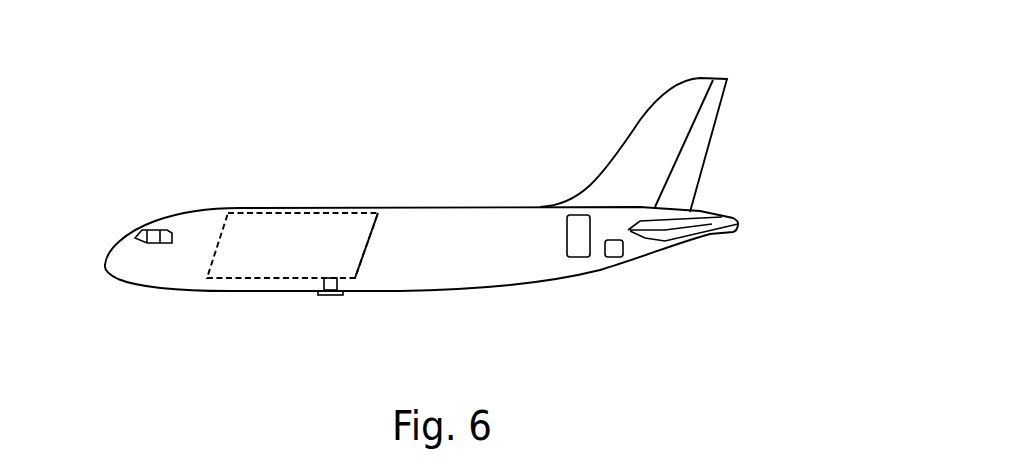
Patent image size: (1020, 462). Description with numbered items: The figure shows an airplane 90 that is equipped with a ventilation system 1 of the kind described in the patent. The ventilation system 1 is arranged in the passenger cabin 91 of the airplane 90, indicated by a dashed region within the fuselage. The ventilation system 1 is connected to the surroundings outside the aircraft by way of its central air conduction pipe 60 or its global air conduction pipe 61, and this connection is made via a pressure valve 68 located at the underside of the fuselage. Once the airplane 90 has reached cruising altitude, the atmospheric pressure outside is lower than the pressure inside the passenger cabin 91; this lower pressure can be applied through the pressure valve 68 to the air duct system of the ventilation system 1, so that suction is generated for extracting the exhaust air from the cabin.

The ventilation system 1 is at (303, 210).
The passenger cabin 91 is at (357, 233).
The pressure valve 68 is at (317, 293).
The central air conduction pipe 60 is at (398, 318).
The global air conduction pipe 61 is at (338, 284).
The airplane 90 is at (436, 220).